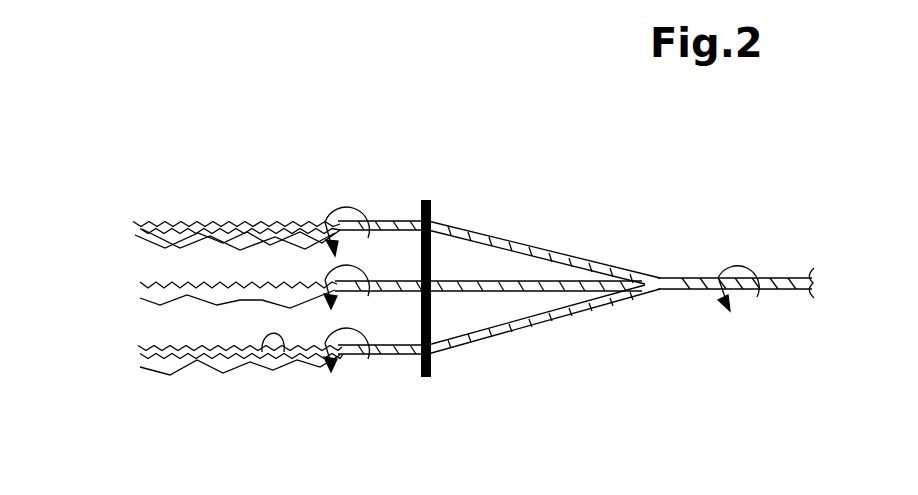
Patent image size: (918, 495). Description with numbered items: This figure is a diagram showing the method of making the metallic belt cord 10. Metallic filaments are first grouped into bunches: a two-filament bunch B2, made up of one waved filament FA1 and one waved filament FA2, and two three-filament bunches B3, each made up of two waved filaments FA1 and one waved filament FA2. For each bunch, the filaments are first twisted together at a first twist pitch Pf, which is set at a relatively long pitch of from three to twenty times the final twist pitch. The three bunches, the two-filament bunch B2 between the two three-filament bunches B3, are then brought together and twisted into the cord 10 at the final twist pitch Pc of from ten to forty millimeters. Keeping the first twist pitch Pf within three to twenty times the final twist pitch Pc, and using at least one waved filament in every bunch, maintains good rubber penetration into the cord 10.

The belt cord 10 is at (791, 260).
The waved filament FA1 is at (232, 220).
The waved filament FA2 is at (172, 247).
The two-filament bunch B2 is at (502, 274).
The three-filament bunch B3 is at (476, 224).
The first twist pitch Pf is at (358, 296).
The final twist pitch Pc is at (738, 275).